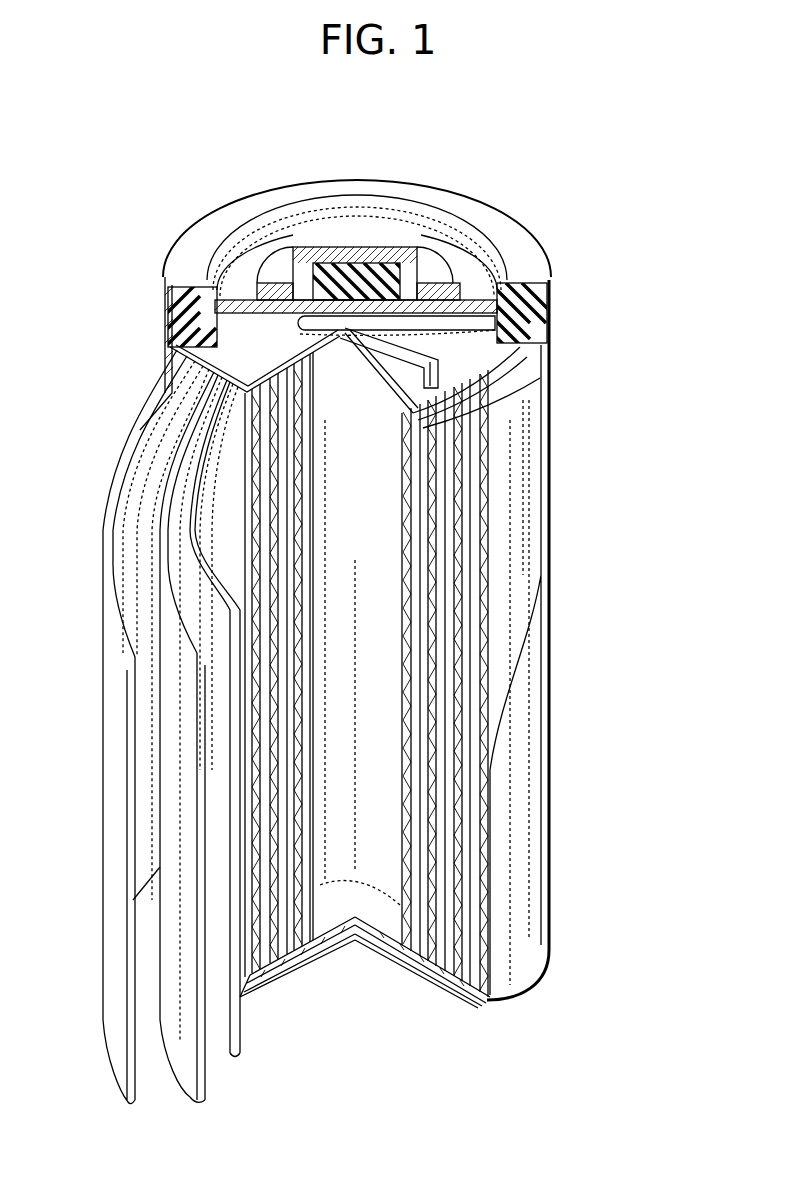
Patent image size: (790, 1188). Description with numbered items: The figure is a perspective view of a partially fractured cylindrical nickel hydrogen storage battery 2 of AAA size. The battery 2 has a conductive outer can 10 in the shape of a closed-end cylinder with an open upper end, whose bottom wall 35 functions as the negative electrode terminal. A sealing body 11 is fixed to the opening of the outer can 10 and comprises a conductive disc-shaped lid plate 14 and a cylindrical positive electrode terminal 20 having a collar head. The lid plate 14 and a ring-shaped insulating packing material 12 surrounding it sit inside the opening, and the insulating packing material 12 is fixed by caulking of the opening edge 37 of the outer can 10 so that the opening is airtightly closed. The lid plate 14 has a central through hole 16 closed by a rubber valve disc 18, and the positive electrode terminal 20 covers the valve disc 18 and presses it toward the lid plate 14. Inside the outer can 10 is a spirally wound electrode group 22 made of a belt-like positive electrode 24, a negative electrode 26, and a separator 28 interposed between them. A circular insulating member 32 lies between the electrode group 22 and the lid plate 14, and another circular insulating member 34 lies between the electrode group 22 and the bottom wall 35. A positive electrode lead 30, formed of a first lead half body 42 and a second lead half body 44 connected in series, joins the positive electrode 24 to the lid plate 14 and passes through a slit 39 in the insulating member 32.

The battery 2 is at (555, 182).
The outer can 10 is at (558, 627).
The sealing body 11 is at (469, 261).
The insulating packing material 12 is at (168, 322).
The lid plate 14 is at (240, 282).
The central through hole 16 is at (530, 316).
The valve disc 18 is at (333, 295).
The positive electrode terminal 20 is at (380, 225).
The electrode group 22 is at (540, 529).
The positive electrode 24 is at (243, 1052).
The negative electrode 26 is at (135, 1093).
The separator 28 is at (207, 1083).
The positive electrode lead 30 is at (470, 373).
The insulating member 32 is at (483, 385).
The insulating member 34 is at (377, 915).
The bottom wall 35 is at (298, 975).
The opening edge 37 is at (518, 252).
The slit 39 is at (497, 400).
The first lead half body 42 is at (295, 318).
The second lead half body 44 is at (383, 360).